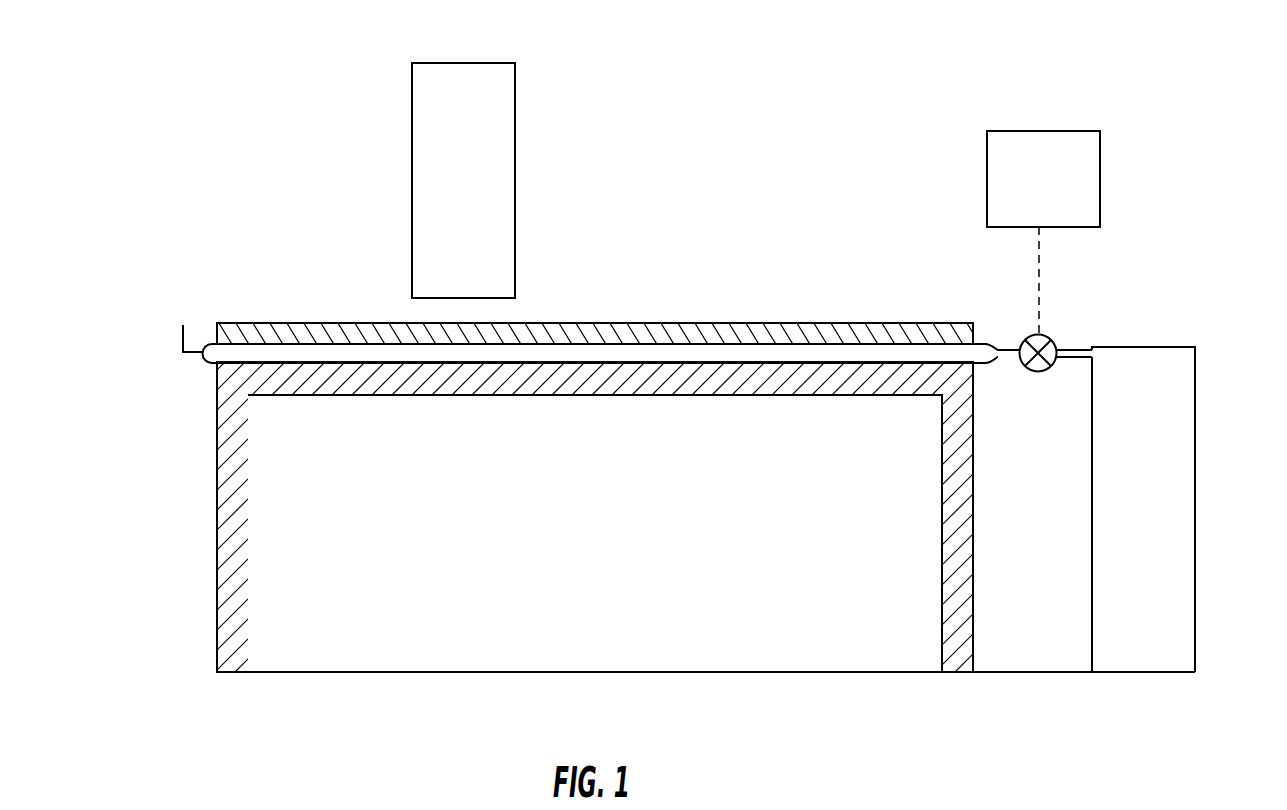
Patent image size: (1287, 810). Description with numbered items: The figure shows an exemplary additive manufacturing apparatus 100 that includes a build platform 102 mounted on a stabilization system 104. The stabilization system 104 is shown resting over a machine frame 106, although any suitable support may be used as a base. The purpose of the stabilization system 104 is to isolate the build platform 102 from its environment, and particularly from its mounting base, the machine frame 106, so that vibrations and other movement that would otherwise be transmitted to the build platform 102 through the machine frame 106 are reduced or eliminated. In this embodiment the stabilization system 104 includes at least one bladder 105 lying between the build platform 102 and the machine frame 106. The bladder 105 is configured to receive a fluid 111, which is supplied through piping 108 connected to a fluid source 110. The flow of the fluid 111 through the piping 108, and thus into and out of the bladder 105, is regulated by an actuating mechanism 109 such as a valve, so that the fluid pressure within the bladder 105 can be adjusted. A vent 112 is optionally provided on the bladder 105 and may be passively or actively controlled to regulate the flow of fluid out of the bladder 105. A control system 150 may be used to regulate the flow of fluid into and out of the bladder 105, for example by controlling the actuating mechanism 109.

The additive manufacturing apparatus 100 is at (158, 158).
The build platform 102 is at (530, 168).
The stabilization system 104 is at (1090, 314).
The bladder 105 is at (323, 355).
The machine frame 106 is at (218, 486).
The piping 108 is at (1074, 371).
The actuating mechanism 109 is at (1024, 384).
The fluid source 110 is at (1195, 476).
The fluid 111 is at (742, 356).
The vent 112 is at (165, 354).
The control system 150 is at (1100, 175).